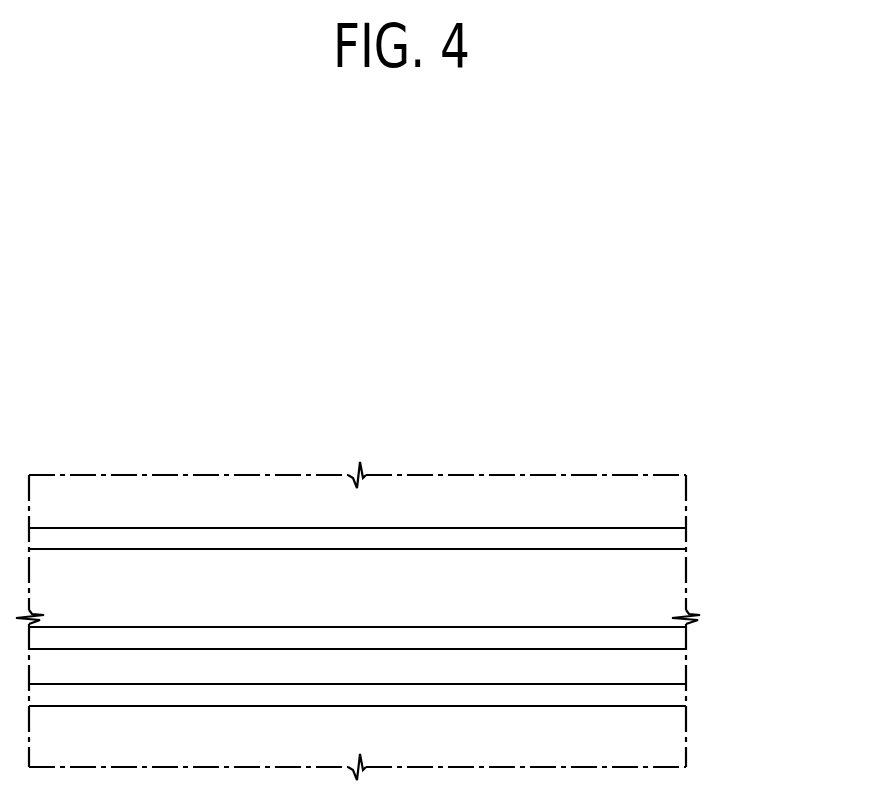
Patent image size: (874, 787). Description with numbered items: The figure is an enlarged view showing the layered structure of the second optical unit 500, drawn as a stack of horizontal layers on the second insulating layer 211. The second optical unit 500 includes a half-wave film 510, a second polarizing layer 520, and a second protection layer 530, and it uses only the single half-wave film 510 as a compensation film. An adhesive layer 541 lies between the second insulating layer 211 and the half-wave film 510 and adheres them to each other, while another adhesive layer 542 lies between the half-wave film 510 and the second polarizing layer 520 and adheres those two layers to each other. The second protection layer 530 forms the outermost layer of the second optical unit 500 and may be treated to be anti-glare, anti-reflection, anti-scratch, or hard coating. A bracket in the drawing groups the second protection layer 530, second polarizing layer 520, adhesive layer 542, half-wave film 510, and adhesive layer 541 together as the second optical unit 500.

The second protection layer 530 is at (663, 540).
The second polarizing layer 520 is at (661, 587).
The adhesive layer 542 is at (661, 637).
The λ/2 film 510 is at (663, 670).
The adhesive layer 541 is at (665, 695).
The second insulating layer 211 is at (665, 738).
The second optical unit 500 is at (795, 544).